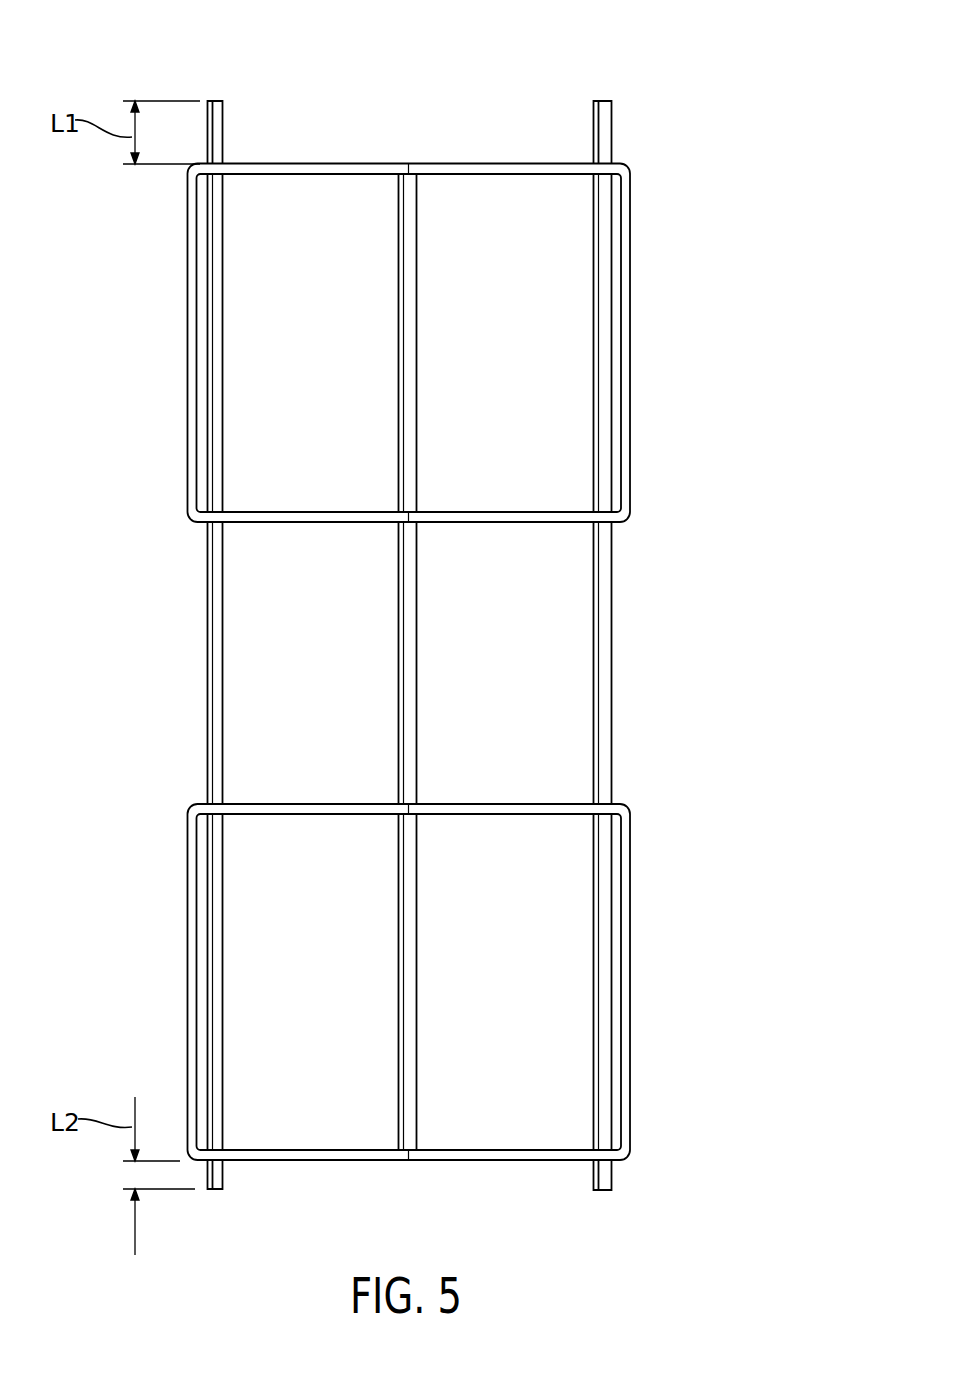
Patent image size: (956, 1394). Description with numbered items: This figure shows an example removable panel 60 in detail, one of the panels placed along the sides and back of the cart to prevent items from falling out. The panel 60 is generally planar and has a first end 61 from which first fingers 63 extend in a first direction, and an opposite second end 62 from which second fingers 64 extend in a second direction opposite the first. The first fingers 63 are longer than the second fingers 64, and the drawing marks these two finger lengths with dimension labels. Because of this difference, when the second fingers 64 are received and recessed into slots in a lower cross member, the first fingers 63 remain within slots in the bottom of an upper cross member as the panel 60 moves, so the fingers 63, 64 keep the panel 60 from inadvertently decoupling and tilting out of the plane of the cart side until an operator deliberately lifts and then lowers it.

The removable panel 60 is at (207, 662).
The first end 61 is at (738, 124).
The second end 62 is at (710, 1142).
The first fingers 63 is at (224, 133).
The second fingers 64 is at (224, 1175).